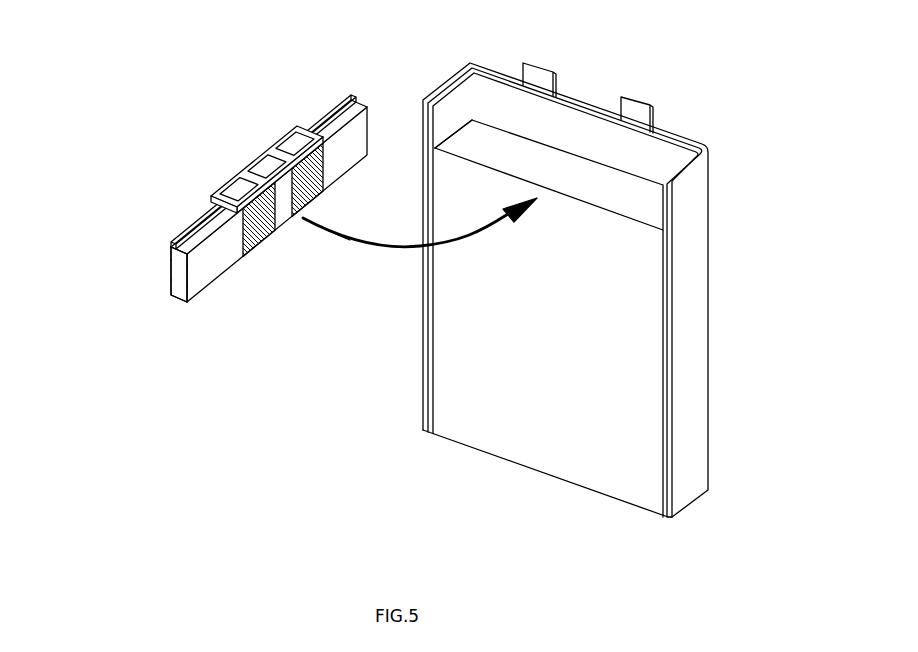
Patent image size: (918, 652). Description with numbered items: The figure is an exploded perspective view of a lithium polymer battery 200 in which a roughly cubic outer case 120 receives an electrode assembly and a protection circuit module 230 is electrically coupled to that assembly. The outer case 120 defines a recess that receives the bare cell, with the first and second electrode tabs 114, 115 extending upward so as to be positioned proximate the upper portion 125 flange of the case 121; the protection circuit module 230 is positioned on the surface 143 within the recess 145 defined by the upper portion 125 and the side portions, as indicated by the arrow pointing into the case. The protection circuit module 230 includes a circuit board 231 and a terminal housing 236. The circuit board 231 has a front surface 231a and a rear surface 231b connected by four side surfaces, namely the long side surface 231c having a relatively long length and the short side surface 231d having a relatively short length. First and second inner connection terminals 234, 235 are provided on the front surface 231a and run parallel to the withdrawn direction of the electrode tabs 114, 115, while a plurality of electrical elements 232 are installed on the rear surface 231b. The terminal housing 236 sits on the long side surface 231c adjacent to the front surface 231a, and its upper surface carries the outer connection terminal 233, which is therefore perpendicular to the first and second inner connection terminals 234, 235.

The lithium polymer battery 200 is at (186, 100).
The protection circuit module 230 is at (249, 184).
The circuit board 231 is at (83, 198).
The front surface 231a is at (190, 284).
The rear surface 231b is at (212, 207).
The long side surface 231c is at (181, 238).
The short side surface 231d is at (177, 266).
The electrical elements 232 is at (328, 115).
The outer connection terminal 233 is at (243, 184).
The first inner connection terminal 234 is at (312, 196).
The second inner connection terminal 235 is at (268, 233).
The terminal housing 236 is at (296, 132).
The outer case 120 is at (610, 270).
The case 121 is at (532, 440).
The upper portion 125 is at (653, 157).
The surface 143 is at (463, 142).
The recess 145 is at (562, 148).
The first electrode tab 114 is at (537, 75).
The second electrode tab 115 is at (635, 108).